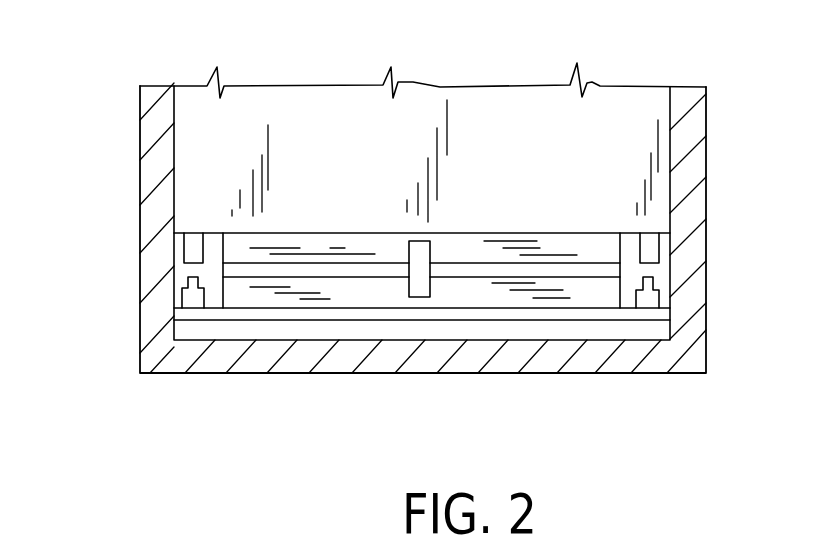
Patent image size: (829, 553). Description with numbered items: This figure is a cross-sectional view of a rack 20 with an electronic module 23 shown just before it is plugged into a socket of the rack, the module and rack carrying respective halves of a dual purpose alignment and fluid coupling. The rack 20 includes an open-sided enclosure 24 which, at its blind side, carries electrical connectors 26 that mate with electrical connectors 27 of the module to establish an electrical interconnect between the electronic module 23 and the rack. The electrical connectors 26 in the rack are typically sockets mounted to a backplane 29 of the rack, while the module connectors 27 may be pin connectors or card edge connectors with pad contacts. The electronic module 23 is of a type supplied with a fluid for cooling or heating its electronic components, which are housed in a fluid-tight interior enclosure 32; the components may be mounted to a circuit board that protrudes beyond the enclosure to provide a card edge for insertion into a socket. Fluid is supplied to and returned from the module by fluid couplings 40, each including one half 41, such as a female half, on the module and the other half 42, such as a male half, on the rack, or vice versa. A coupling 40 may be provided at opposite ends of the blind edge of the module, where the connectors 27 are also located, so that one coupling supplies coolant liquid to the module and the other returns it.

The rack 20 is at (137, 153).
The electronic module 23 is at (423, 55).
The open-sided enclosure 24 is at (706, 172).
The electrical connectors 26 is at (325, 300).
The electrical connectors 27 is at (562, 248).
The backplane 29 is at (482, 313).
The fluid-tight interior enclosure 32 is at (283, 107).
The fluid coupling 40 is at (178, 277).
The one half of fluid coupling 41 is at (659, 249).
The other half of fluid coupling 42 is at (648, 299).